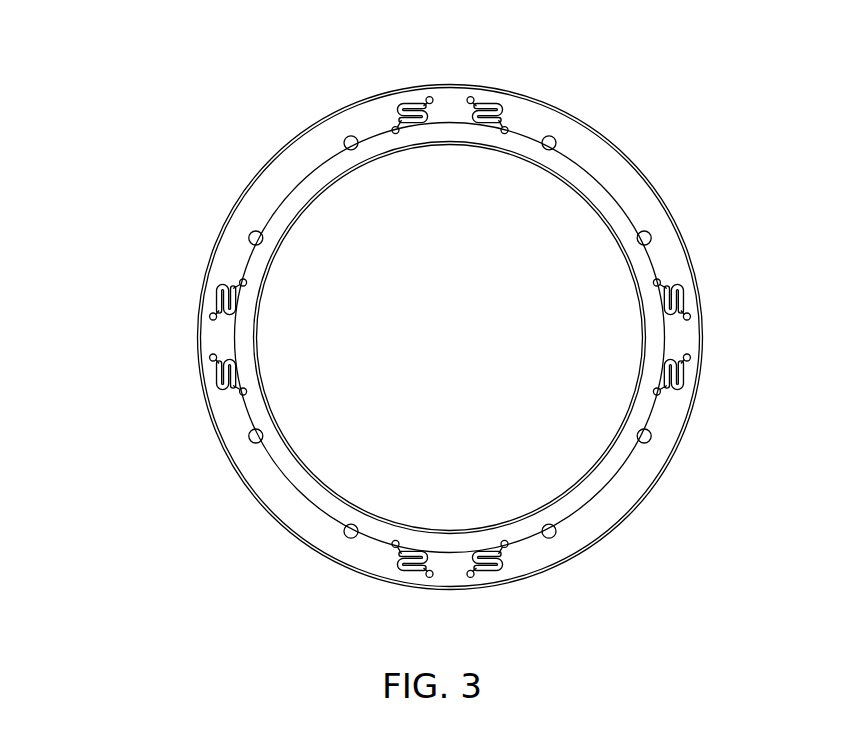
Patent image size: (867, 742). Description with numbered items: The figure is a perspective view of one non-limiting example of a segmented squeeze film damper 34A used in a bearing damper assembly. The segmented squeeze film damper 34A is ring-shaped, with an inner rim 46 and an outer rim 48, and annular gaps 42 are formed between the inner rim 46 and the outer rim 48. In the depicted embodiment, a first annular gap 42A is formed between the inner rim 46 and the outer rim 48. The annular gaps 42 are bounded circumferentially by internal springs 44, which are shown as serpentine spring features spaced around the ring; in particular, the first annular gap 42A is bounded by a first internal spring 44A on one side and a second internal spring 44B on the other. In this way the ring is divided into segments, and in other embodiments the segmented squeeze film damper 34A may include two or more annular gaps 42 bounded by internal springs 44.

The segmented squeeze film damper 34A is at (133, 41).
The annular gaps 42 is at (608, 170).
The first annular gap 42A is at (292, 180).
The internal springs 44 is at (487, 92).
The first internal spring 44A is at (208, 306).
The second internal spring 44B is at (405, 91).
The inner rim 46 is at (294, 193).
The outer rim 48 is at (245, 197).